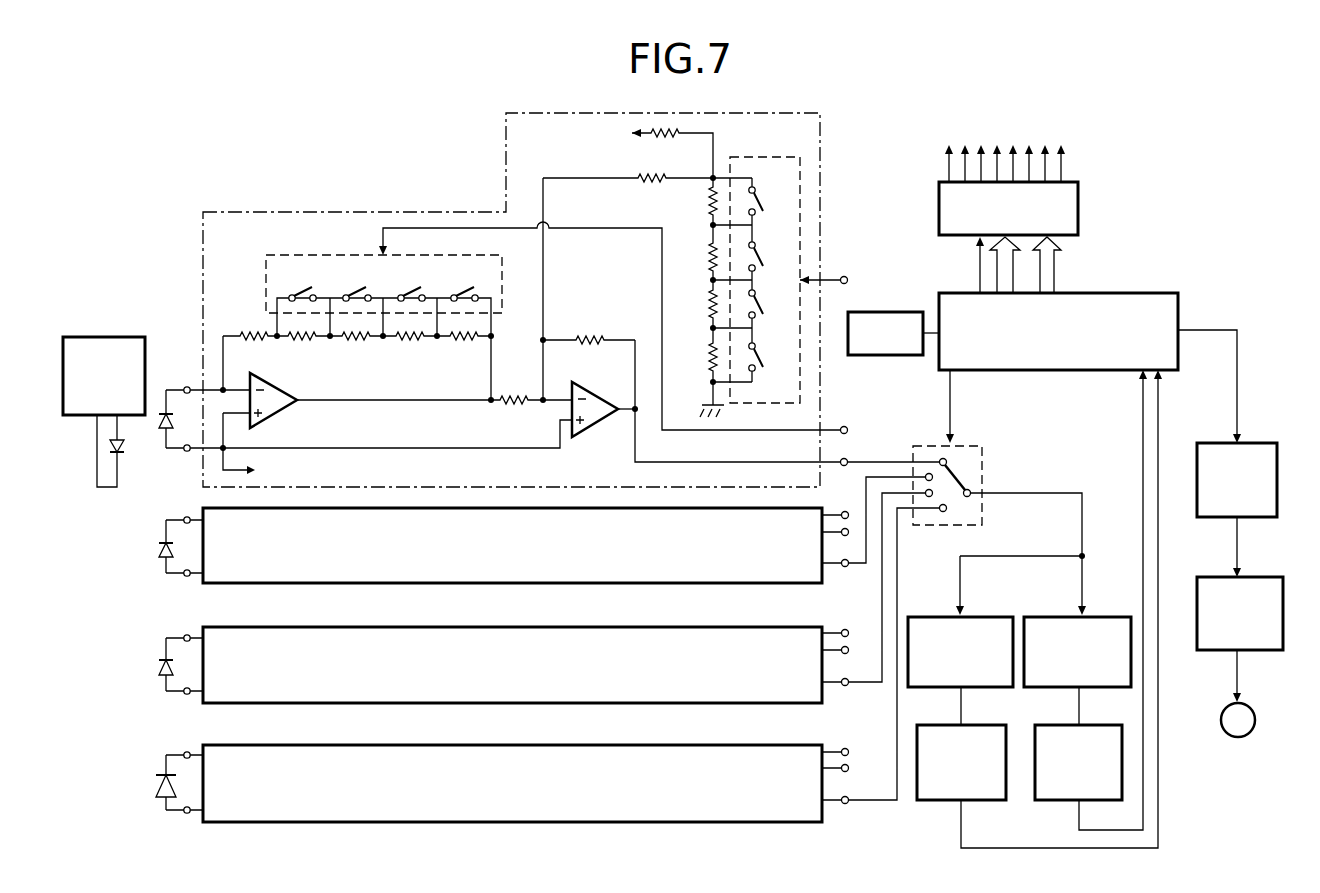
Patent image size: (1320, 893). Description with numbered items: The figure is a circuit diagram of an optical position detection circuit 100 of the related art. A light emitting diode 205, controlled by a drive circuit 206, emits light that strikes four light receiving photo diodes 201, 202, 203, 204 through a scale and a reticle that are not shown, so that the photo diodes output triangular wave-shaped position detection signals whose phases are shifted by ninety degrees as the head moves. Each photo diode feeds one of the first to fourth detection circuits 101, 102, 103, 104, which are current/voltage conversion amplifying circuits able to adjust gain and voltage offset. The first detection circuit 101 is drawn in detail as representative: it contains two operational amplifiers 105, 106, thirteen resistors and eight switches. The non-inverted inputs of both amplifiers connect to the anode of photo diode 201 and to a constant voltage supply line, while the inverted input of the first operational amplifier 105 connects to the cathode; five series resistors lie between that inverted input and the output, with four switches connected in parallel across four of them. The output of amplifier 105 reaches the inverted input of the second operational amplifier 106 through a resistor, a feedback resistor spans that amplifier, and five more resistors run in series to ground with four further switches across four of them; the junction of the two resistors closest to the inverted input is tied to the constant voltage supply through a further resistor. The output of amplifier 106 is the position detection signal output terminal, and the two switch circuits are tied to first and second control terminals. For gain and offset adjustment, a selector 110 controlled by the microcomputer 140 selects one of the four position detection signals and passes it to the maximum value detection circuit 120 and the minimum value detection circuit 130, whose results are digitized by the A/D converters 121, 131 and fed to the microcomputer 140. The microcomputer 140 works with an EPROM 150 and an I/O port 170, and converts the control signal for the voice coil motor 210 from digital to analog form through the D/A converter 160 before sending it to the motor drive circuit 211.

The position detection circuit 100 is at (177, 139).
The first detection circuit 101 is at (235, 212).
The second detection circuit 102 is at (203, 508).
The third detection circuit 103 is at (203, 627).
The fourth detection circuit 104 is at (203, 745).
The first operational amplifier 105 is at (287, 413).
The second operational amplifier 106 is at (608, 372).
The selector 110 is at (920, 443).
The maximum value detection circuit 120 is at (992, 613).
The A/D converter 121 is at (950, 800).
The minimum value detection circuit 130 is at (1097, 613).
The A/D converter 131 is at (1065, 800).
The microcomputer 140 is at (1103, 292).
The erasable programmable read only memory 150 is at (895, 312).
The digital-to-analog converter 160 is at (1216, 442).
The input-output port 170 is at (1067, 178).
The photo diode 201 is at (166, 410).
The photo diode 202 is at (157, 545).
The photo diode 203 is at (157, 664).
The photo diode 204 is at (157, 782).
The light emitting diode 205 is at (124, 452).
The drive circuit 206 is at (106, 337).
The voice coil motor 210 is at (1227, 737).
The motor drive circuit 211 is at (1210, 575).